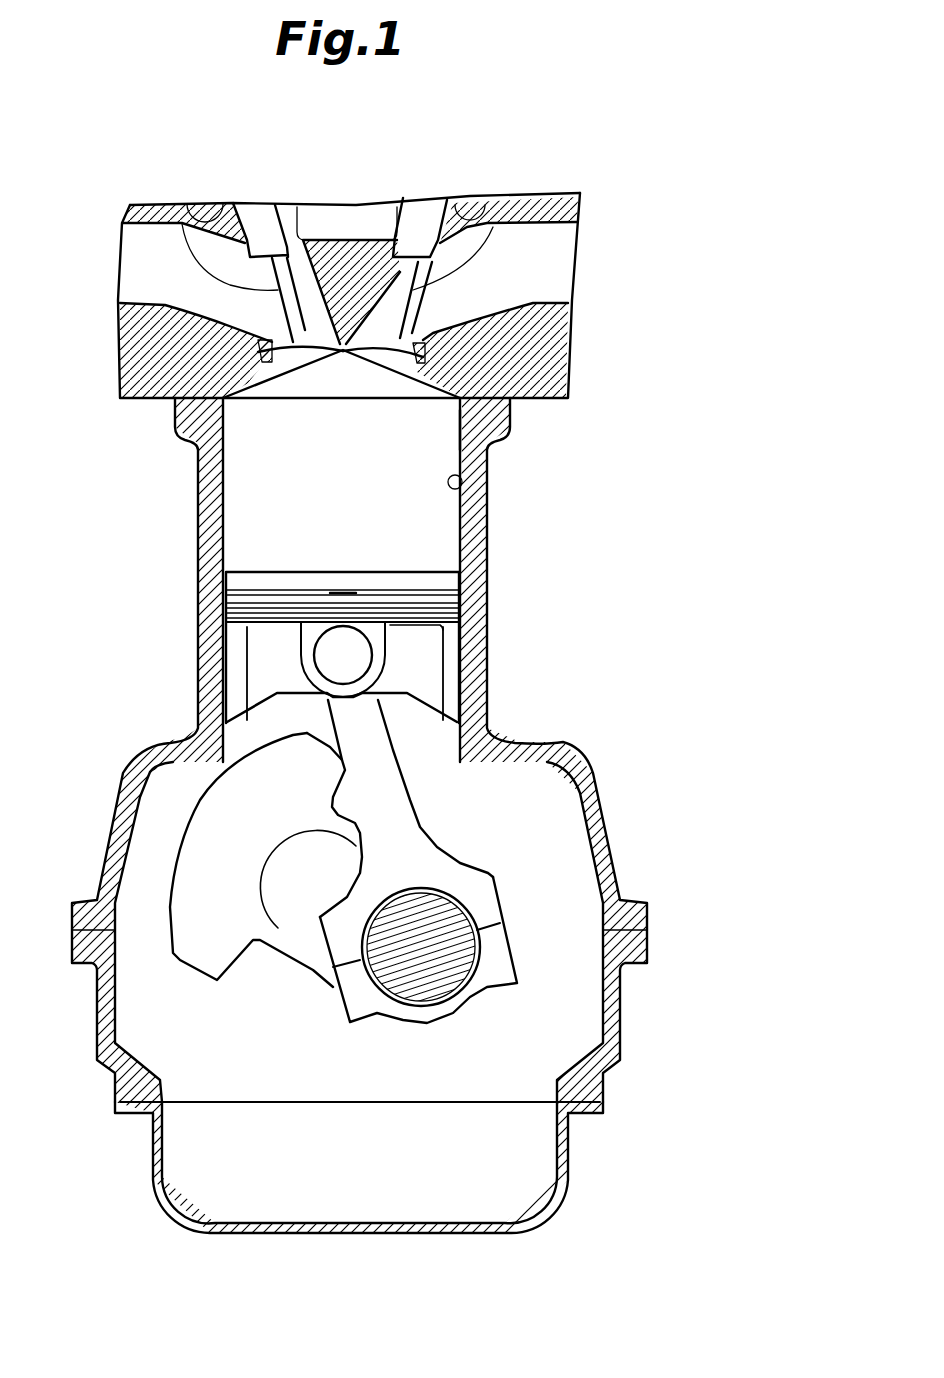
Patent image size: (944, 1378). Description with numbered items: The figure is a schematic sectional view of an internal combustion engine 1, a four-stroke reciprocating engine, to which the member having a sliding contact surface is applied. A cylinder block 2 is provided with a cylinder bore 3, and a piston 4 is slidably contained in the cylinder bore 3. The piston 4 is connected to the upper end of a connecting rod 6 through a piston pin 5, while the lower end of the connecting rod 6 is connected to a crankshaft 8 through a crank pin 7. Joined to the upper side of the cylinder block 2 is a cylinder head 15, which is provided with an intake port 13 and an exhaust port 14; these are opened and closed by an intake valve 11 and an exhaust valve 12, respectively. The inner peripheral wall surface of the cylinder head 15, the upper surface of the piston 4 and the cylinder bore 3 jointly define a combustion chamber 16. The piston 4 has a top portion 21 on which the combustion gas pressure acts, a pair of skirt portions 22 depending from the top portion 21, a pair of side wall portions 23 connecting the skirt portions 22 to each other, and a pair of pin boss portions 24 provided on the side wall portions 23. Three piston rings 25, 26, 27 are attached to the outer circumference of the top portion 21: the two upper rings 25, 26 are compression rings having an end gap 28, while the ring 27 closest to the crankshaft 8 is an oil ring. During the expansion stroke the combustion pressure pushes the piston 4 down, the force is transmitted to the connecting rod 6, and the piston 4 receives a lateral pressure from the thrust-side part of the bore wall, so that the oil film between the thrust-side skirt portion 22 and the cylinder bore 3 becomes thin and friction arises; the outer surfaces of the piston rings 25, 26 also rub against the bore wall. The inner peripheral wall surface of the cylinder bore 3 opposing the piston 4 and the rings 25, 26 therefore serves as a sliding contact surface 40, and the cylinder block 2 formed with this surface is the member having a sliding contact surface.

The internal combustion engine 1 is at (550, 160).
The cylinder block 2 is at (210, 467).
The cylinder bore 3 is at (462, 483).
The piston 4 is at (237, 580).
The piston pin 5 is at (327, 657).
The connecting rod 6 is at (400, 813).
The crank pin 7 is at (450, 920).
The crankshaft 8 is at (265, 883).
The intake valve 11 is at (188, 228).
The exhaust valve 12 is at (487, 225).
The intake port 13 is at (162, 303).
The exhaust port 14 is at (533, 300).
The cylinder head 15 is at (550, 345).
The combustion chamber 16 is at (352, 447).
The top portion 21 is at (273, 567).
The skirt portions 22 is at (237, 693).
The side wall portions 23 is at (273, 643).
The pin boss portions 24 is at (377, 665).
The piston ring 25 is at (460, 577).
The piston ring 26 is at (460, 598).
The piston ring 27 is at (460, 615).
The end gap 28 is at (343, 592).
The sliding contact surface 40 is at (460, 433).